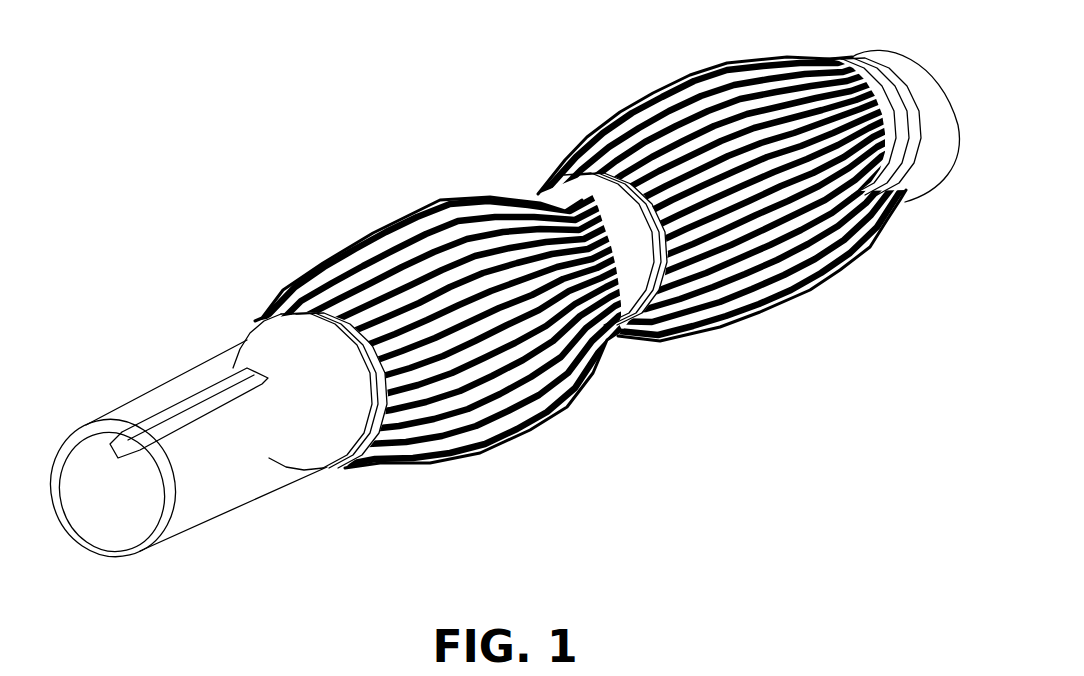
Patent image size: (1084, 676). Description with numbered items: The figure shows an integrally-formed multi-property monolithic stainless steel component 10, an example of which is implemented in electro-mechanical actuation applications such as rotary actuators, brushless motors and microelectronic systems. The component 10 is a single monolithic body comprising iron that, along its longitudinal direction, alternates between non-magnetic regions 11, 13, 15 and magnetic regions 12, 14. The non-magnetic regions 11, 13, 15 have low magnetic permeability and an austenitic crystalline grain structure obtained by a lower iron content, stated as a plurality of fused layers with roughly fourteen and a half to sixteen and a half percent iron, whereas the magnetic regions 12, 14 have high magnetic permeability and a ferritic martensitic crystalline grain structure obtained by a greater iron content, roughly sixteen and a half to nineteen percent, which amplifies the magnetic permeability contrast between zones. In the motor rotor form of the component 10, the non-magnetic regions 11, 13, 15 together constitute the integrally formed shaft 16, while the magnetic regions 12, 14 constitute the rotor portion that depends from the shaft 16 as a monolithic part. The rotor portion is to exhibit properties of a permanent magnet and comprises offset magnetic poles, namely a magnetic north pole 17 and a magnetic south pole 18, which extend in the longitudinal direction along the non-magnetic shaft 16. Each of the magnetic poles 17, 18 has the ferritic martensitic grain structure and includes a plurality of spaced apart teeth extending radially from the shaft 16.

The integrally-formed multi-property monolithic stainless steel component 10 is at (158, 128).
The non-magnetic region 11 is at (155, 400).
The magnetic region 12 is at (447, 333).
The non-magnetic region 13 is at (560, 203).
The magnetic region 14 is at (725, 194).
The non-magnetic region 15 is at (848, 58).
The shaft 16 is at (218, 490).
The magnetic north pole 17 is at (490, 410).
The magnetic south pole 18 is at (832, 257).